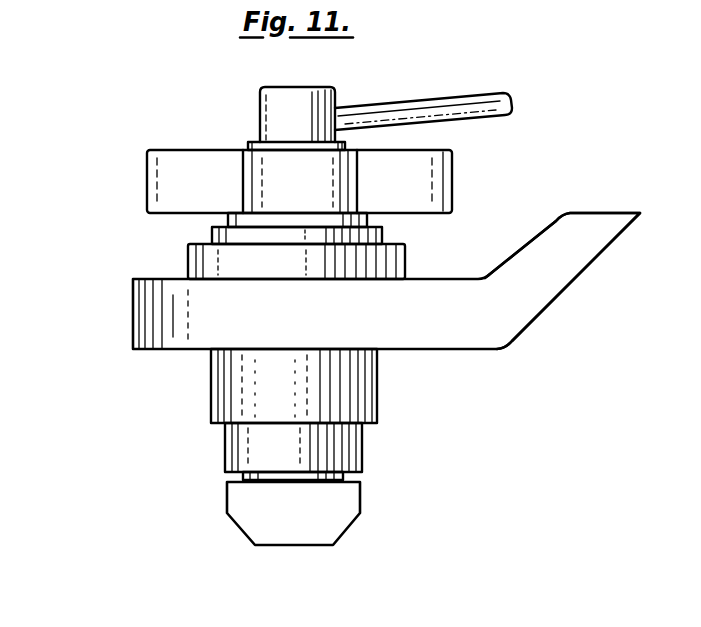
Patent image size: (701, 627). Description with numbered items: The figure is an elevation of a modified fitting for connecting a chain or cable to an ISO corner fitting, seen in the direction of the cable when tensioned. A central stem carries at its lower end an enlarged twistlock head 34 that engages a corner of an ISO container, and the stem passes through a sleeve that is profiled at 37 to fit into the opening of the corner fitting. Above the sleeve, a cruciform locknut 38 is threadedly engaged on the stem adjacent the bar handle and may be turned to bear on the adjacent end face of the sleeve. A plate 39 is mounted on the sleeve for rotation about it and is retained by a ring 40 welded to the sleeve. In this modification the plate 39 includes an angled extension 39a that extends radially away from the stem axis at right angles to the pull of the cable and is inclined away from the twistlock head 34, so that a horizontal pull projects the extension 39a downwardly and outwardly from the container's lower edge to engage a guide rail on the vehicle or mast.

The twistlock head 34 is at (246, 503).
The profiled portion of sleeve 37 is at (365, 437).
The cruciform locknut 38 is at (147, 175).
The plate 39 is at (168, 339).
The angled extension 39a is at (521, 295).
The ring 40 is at (187, 267).